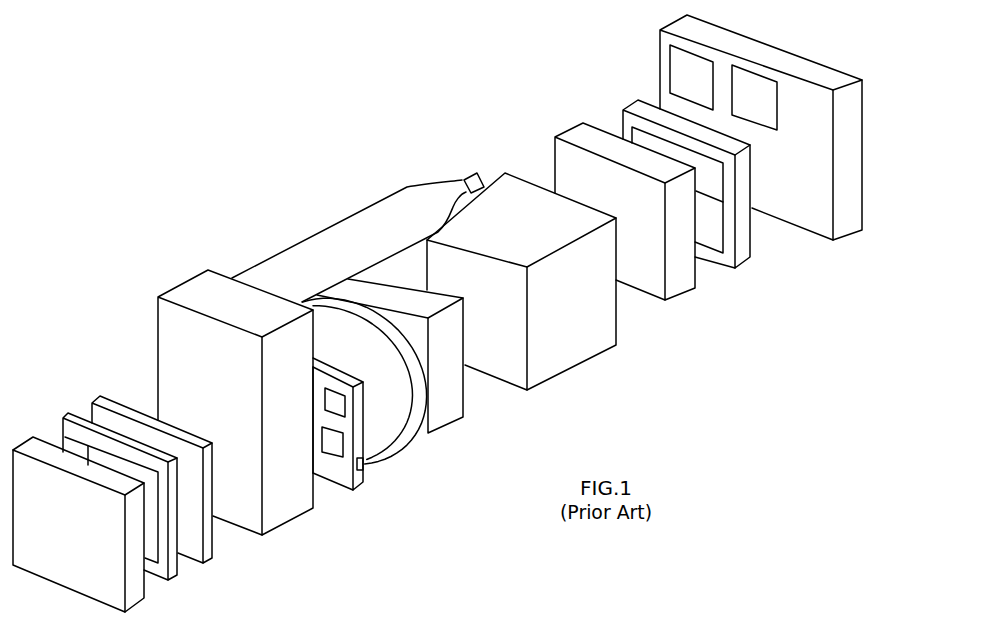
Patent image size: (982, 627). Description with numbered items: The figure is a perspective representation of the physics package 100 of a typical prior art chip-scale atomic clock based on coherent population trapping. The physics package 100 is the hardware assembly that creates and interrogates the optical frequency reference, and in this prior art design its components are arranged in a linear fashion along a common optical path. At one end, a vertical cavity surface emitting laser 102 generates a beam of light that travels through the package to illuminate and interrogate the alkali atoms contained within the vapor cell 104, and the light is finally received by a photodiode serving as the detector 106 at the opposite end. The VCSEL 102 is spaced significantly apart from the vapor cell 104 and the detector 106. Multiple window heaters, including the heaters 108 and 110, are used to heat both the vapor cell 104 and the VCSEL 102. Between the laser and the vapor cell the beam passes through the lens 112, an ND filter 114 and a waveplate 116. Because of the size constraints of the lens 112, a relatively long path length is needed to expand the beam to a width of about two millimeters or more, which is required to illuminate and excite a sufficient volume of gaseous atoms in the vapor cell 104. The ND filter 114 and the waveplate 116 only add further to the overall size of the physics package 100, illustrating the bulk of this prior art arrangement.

The physics package 100 is at (131, 122).
The vertical cavity surface emitting laser 102 is at (817, 178).
The vapor cell 104 is at (225, 388).
The detector 106 is at (81, 540).
The window heater 108 is at (165, 525).
The window heater 110 is at (730, 255).
The lens 112 is at (586, 320).
The ND filter 114 is at (656, 220).
The waveplate 116 is at (378, 363).